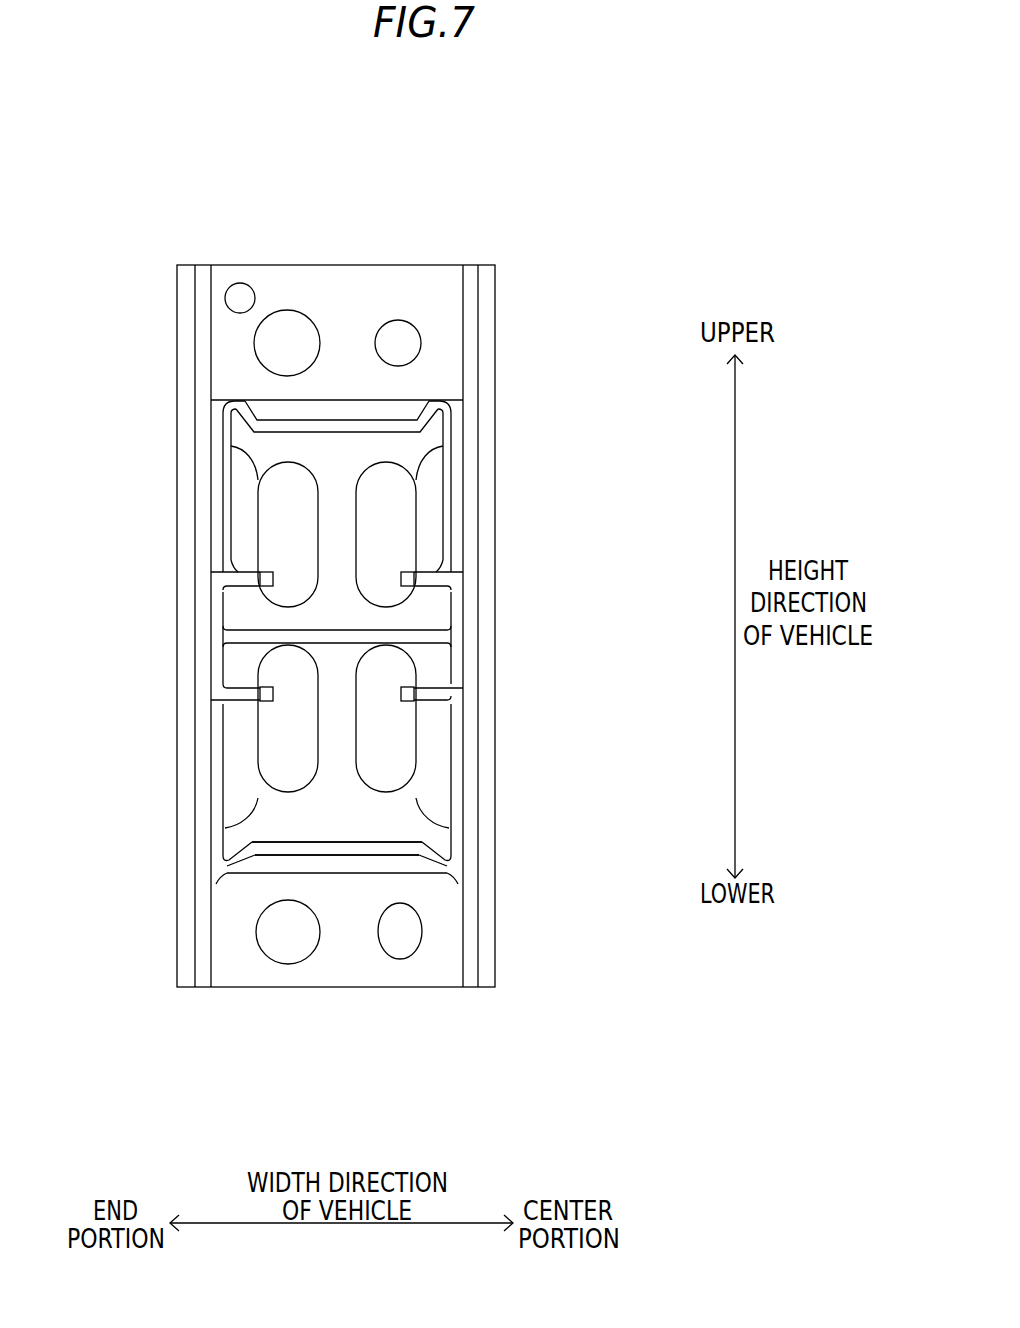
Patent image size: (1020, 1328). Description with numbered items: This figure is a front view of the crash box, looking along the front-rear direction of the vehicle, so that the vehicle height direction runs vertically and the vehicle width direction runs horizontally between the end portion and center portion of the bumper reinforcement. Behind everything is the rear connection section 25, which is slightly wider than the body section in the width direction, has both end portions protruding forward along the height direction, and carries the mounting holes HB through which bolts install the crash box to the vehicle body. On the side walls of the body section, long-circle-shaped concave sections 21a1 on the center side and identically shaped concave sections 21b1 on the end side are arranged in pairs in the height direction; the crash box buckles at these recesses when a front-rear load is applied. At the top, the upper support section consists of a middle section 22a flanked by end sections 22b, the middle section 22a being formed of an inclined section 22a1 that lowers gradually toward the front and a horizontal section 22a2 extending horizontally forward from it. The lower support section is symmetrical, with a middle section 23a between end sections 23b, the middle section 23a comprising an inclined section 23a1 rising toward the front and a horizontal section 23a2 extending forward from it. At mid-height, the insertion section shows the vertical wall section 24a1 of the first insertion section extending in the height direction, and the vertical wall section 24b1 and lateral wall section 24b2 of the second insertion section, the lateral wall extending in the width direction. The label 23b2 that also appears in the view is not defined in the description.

The rear connection section 25 is at (458, 266).
The mounting holes HB is at (238, 283).
The middle section 22a is at (337, 274).
The inclined section 22a1 is at (365, 410).
The horizontal section 22a2 is at (328, 417).
The end sections 22b is at (229, 400).
The middle section 23a is at (337, 984).
The inclined section 23a1 is at (362, 868).
The horizontal section 23a2 is at (450, 572).
The end sections 23b is at (226, 875).
The concave sections 21a1 is at (437, 496).
The concave sections 21b1 is at (243, 497).
The end-side bead web portion 23b2 is at (235, 572).
The vertical wall section 24a1 is at (456, 607).
The vertical wall section 24b1 is at (216, 606).
The lateral wall section 24b2 is at (222, 701).